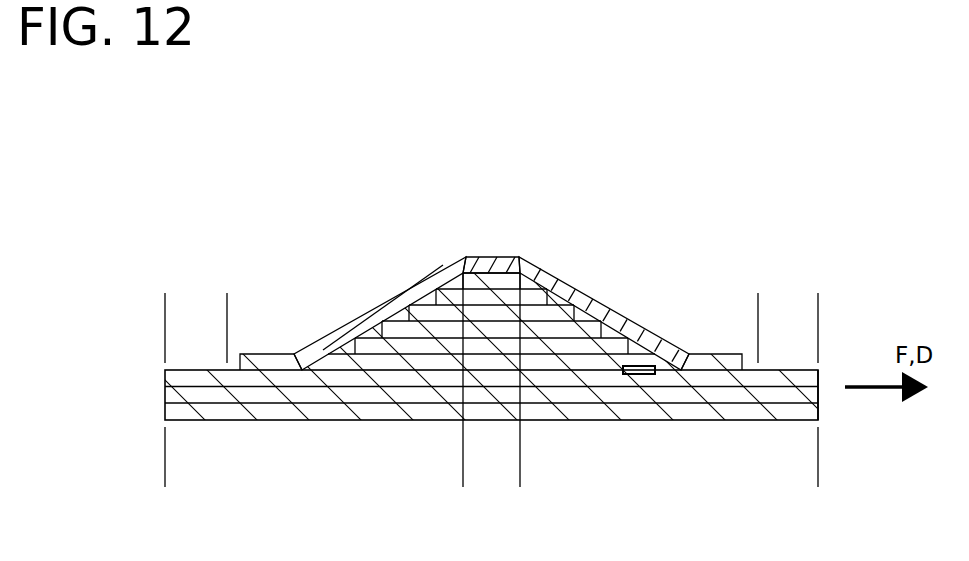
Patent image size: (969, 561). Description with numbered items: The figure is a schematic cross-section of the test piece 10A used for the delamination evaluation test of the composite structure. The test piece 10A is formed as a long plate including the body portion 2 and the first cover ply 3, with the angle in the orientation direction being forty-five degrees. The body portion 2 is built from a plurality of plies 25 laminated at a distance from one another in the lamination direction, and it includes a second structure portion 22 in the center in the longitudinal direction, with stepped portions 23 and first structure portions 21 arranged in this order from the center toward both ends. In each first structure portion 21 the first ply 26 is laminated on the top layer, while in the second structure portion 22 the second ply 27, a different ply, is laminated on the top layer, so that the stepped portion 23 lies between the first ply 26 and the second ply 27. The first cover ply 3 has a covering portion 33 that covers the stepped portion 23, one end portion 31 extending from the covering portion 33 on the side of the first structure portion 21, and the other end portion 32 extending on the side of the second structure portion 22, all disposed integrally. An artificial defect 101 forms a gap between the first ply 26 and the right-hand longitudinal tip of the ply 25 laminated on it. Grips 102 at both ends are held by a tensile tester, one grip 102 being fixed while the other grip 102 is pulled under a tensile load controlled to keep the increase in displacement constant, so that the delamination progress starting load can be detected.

The test piece 10A is at (247, 148).
The body portion 2 is at (313, 422).
The first cover ply 3 is at (327, 332).
The first structure portion 21 is at (328, 477).
The second structure portion 22 is at (520, 477).
The stepped portion 23 is at (328, 354).
The plies 25 is at (645, 342).
The first ply 26 is at (819, 378).
The second ply 27 is at (533, 278).
The one end portion 31 is at (275, 363).
The other end portion 32 is at (497, 260).
The covering portion 33 is at (362, 318).
The artificial defect 101 is at (657, 366).
The grips 102 is at (227, 304).